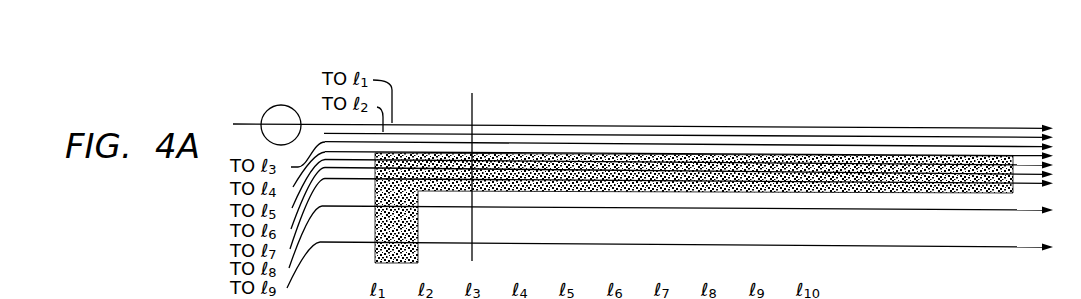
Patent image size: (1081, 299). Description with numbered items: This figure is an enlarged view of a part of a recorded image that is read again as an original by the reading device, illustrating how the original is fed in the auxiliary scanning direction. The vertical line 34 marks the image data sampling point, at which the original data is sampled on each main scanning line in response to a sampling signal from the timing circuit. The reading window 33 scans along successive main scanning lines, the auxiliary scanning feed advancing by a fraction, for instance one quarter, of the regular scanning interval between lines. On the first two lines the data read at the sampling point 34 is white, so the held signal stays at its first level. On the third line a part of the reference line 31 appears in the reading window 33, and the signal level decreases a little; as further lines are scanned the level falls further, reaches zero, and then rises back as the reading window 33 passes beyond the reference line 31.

The reference line 31 is at (581, 153).
The reading window 33 is at (278, 115).
The sampling point 34 is at (486, 175).